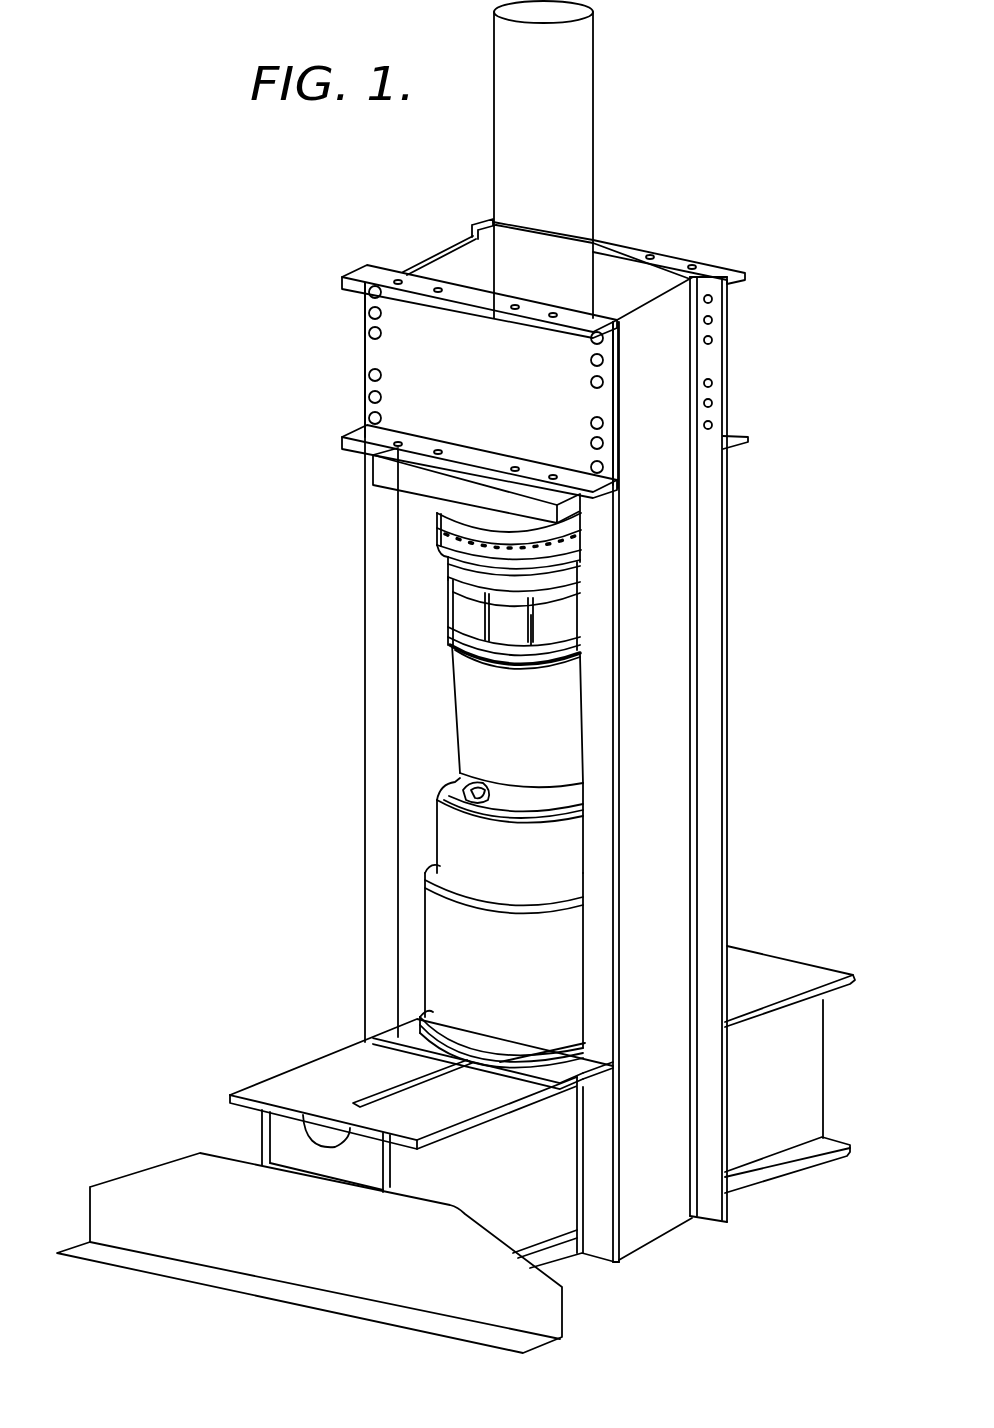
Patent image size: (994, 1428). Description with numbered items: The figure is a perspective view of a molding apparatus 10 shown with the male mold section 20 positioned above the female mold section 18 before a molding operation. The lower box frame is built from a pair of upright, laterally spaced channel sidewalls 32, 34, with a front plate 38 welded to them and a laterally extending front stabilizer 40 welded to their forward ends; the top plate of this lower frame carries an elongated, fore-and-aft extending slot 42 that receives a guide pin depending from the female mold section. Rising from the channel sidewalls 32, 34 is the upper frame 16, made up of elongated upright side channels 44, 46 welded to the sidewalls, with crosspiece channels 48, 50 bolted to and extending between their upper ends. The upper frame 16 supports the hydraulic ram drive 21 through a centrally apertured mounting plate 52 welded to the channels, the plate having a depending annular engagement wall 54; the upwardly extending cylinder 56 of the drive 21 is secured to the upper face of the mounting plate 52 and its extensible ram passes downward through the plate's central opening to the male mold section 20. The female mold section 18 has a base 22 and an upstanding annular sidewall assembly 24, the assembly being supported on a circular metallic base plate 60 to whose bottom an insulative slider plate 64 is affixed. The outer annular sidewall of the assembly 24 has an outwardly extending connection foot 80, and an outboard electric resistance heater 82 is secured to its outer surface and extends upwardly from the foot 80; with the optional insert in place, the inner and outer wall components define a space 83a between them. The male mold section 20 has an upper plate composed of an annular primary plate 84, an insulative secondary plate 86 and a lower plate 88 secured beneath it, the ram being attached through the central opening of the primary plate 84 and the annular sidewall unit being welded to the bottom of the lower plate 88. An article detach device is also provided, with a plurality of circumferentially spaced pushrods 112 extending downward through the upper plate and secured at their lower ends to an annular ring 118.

The apparatus 10 is at (700, 108).
The upper frame 16 is at (743, 555).
The female mold section 18 is at (358, 812).
The male mold section 20 is at (414, 643).
The hydraulic ram drive 21 is at (606, 221).
The base 22 is at (351, 1038).
The annular sidewall assembly 24 is at (410, 957).
The channel sidewall 32 is at (760, 1145).
The channel sidewall 34 is at (258, 1143).
The front plate 38 is at (350, 1157).
The front stabilizer 40 is at (137, 1190).
The slot 42 is at (390, 1082).
The side channel 44 is at (672, 682).
The side channel 46 is at (372, 728).
The crosspiece channel 48 is at (382, 356).
The crosspiece channel 50 is at (728, 273).
The mounting plate 52 is at (385, 462).
The engagement wall 54 is at (410, 488).
The cylinder 56 is at (580, 64).
The base plate 60 is at (498, 1074).
The slider plate 64 is at (590, 1080).
The connection foot 80 is at (530, 1055).
The outboard electric resistance heater 82 is at (450, 914).
The space 83a is at (466, 781).
The primary plate 84 is at (558, 552).
The secondary plate 86 is at (563, 572).
The lower plate 88 is at (577, 597).
The pushrods 112 is at (535, 640).
The annular ring 118 is at (493, 658).